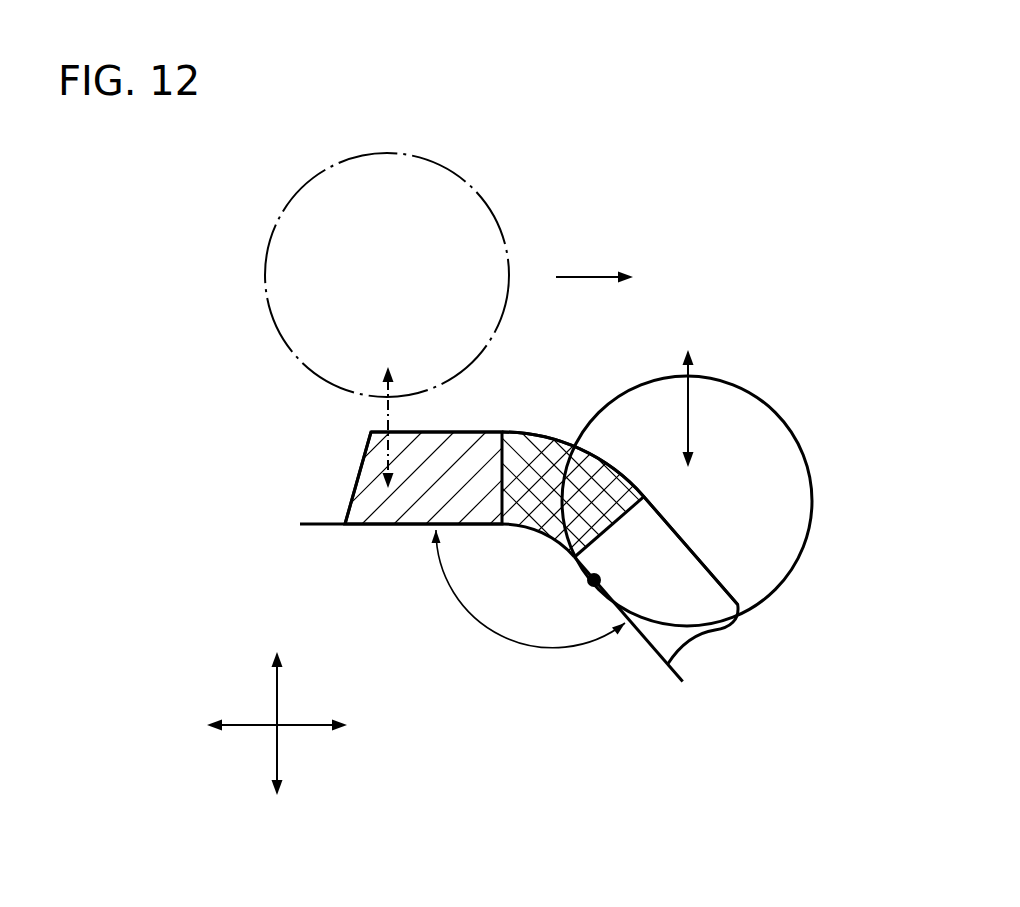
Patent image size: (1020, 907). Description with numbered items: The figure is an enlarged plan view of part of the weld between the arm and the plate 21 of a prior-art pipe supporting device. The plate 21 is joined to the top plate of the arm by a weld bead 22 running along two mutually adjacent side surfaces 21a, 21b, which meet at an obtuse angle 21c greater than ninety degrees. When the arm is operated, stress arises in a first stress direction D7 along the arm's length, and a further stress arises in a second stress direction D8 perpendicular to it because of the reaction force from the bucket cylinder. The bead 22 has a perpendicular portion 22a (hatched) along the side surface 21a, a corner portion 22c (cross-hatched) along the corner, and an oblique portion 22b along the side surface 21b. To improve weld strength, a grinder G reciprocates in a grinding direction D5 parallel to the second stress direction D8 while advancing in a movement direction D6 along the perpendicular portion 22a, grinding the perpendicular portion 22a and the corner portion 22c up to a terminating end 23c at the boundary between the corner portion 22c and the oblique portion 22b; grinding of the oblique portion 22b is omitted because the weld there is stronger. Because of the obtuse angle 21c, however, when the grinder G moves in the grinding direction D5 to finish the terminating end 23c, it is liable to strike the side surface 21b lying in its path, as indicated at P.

The plate 21 is at (418, 650).
The side surface 21a is at (364, 522).
The side surface 21b is at (640, 628).
The angle 21c is at (482, 625).
The weld bead 22 is at (712, 647).
The perpendicular portion 22a is at (437, 437).
The oblique portion 22b is at (678, 553).
The corner portion 22c is at (630, 483).
The terminating end 23c is at (612, 524).
The contact point P is at (588, 583).
The grinder G is at (455, 170).
The grinding direction D5 is at (388, 413).
The movement direction D6 is at (582, 277).
The first stress direction D7 is at (296, 726).
The second stress direction D8 is at (277, 710).